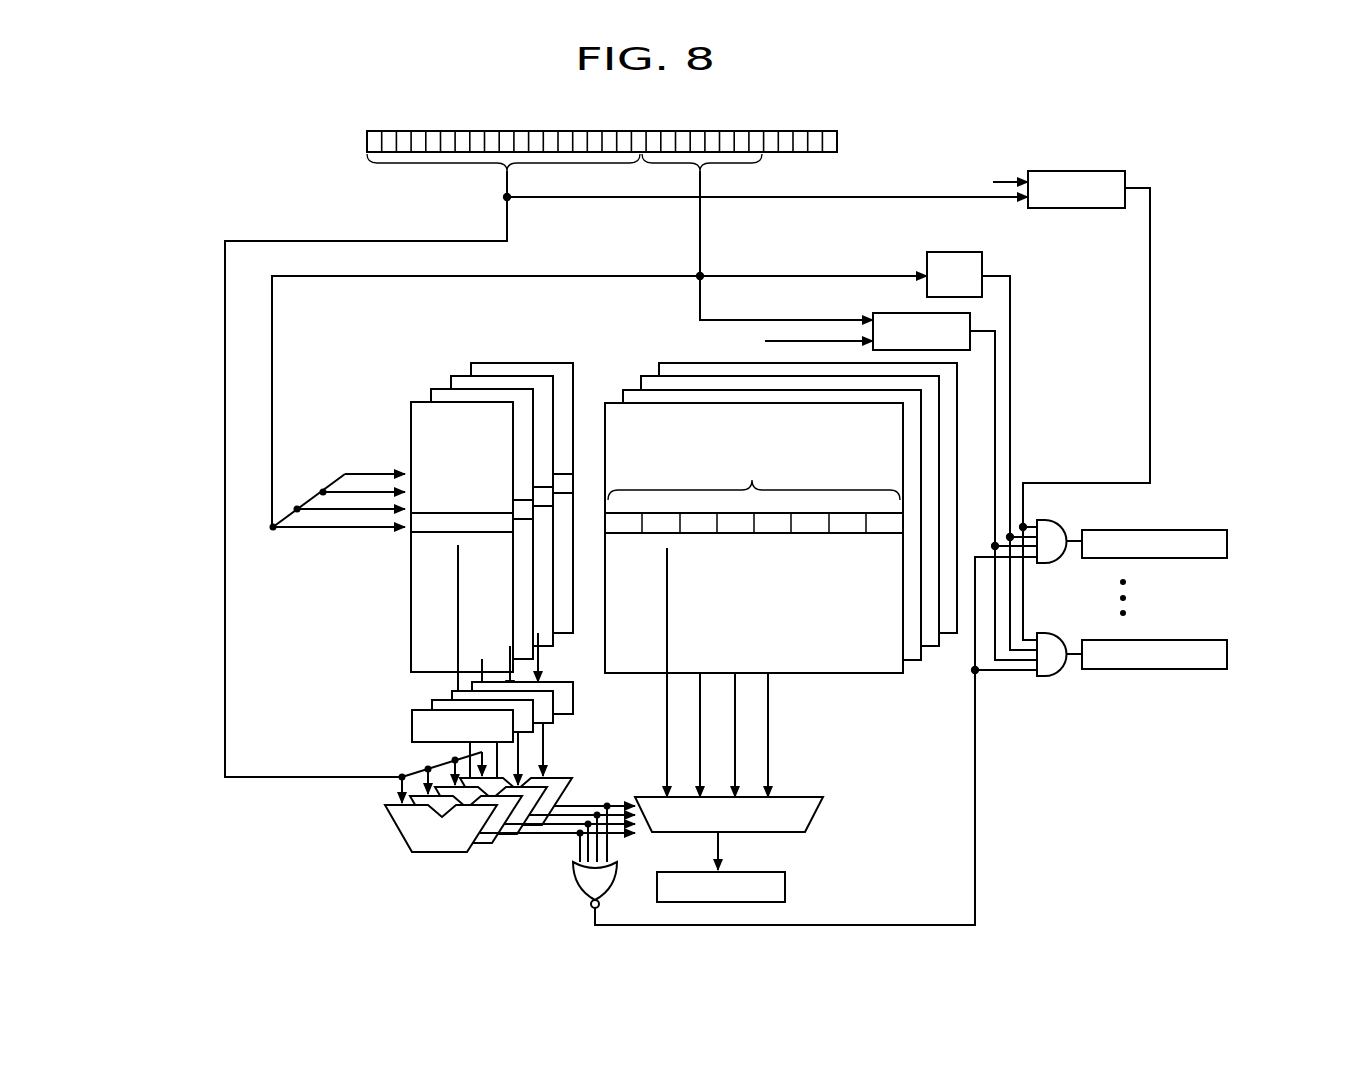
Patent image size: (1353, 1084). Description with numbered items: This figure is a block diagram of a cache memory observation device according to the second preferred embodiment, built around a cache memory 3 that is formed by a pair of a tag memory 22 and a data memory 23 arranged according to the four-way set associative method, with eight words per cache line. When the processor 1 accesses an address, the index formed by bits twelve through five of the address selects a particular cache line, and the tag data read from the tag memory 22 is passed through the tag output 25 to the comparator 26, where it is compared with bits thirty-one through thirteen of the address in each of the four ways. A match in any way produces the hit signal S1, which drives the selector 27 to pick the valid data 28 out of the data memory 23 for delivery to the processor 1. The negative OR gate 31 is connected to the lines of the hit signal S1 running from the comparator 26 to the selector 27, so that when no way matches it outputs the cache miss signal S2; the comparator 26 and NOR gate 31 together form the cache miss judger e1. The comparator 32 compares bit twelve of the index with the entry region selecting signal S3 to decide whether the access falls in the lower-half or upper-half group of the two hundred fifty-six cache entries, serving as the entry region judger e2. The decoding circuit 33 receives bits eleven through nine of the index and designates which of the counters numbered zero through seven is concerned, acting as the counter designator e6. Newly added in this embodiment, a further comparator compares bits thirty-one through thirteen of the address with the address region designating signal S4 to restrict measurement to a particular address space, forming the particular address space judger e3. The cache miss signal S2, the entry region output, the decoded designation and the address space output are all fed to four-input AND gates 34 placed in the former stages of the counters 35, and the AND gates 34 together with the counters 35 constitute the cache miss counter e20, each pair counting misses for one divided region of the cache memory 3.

The processor 1 is at (367, 141).
The cache memory 3 is at (400, 372).
The tag memory 22 is at (411, 598).
The data memory 23 is at (805, 674).
The TAG output 25 is at (412, 728).
The comparator 26 is at (398, 833).
The selector 27 is at (800, 796).
The valid data 28 is at (785, 888).
The negative OR (NOR) gate 31 is at (573, 894).
The comparator 32 is at (885, 313).
The decoding circuit 33 is at (985, 264).
The AND gates 34 is at (1078, 172).
The Nos. 0-7 counters 35 is at (1227, 547).
The hit signal S1 is at (551, 845).
The cache miss signal S2 is at (816, 741).
The entry region selecting signal S3 is at (653, 342).
The address region designating signal S4 is at (906, 175).
The cache miss judger e1 is at (318, 833).
The entry region judger e2 is at (1032, 350).
The particular address space judger e3 is at (1196, 147).
The counter designator e6 is at (1040, 288).
The cache miss counter e20 is at (1178, 697).